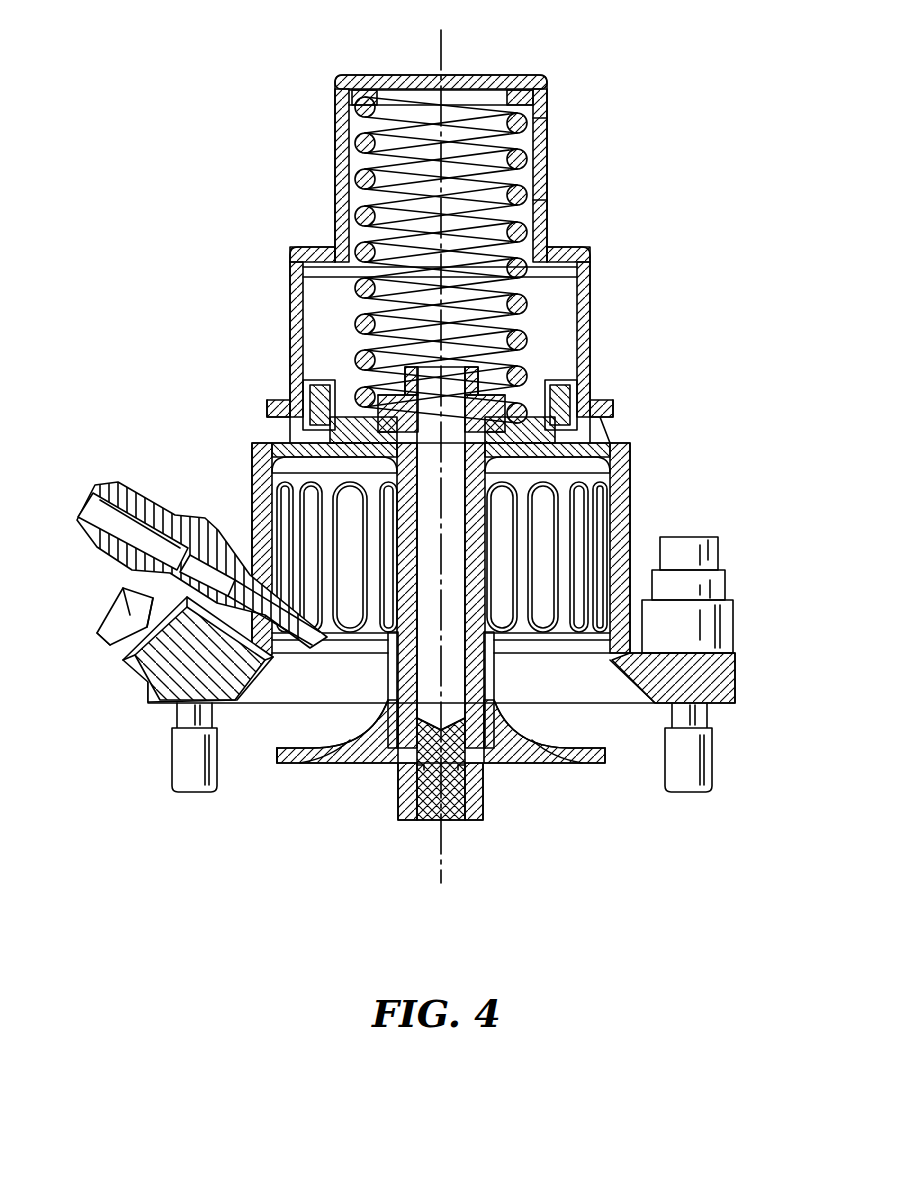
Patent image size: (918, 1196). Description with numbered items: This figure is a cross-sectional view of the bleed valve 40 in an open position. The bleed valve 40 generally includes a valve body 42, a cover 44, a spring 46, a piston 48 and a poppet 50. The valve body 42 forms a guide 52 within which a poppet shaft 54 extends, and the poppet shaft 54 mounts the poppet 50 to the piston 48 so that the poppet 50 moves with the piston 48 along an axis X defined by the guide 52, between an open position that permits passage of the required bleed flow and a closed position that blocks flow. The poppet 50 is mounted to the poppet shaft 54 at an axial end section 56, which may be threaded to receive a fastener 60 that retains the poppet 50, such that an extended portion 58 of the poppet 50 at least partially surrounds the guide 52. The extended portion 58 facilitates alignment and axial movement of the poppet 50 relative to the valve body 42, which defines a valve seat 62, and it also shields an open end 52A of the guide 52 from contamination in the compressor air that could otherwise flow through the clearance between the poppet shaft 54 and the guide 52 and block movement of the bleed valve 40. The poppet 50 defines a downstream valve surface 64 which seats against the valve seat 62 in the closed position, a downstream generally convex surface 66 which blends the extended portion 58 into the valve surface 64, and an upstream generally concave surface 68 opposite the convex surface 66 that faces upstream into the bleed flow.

The bleed valve 40 is at (718, 286).
The valve body 42 is at (630, 446).
The cover 44 is at (295, 280).
The spring 46 is at (443, 118).
The piston 48 is at (558, 386).
The poppet 50 is at (520, 748).
The guide 52 is at (478, 557).
The open end 52A is at (392, 670).
The poppet shaft 54 is at (468, 612).
The axial end section 56 is at (418, 807).
The extended portion 58 is at (493, 685).
The fastener 60 is at (483, 817).
The valve seat 62 is at (283, 665).
The downstream valve surface 64 is at (280, 744).
The downstream generally convex surface 66 is at (567, 747).
The upstream generally concave surface 68 is at (330, 763).
The axis X is at (441, 860).